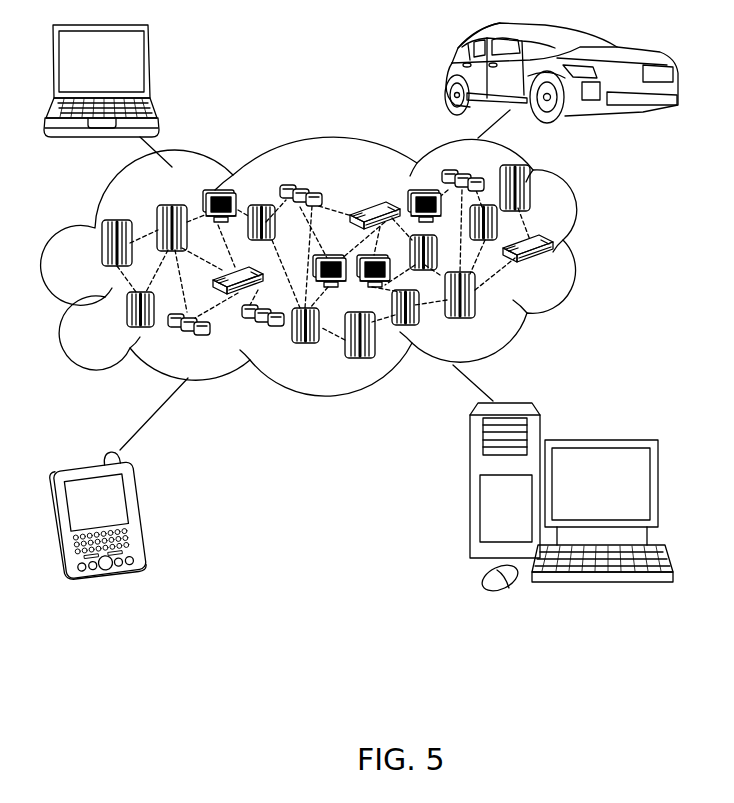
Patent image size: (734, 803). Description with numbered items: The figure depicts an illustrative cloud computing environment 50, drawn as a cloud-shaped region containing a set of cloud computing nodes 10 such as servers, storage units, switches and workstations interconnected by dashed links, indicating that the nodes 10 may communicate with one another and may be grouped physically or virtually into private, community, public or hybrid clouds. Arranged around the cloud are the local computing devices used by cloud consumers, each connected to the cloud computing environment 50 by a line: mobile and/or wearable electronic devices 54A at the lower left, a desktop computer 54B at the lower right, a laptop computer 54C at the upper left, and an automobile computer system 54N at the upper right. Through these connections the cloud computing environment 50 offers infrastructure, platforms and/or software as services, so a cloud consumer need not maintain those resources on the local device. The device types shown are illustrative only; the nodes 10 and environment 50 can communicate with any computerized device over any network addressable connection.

The cloud computing nodes 10 is at (560, 268).
The cloud computing environment 50 is at (597, 250).
The mobile and/or wearable electronic devices 54A is at (147, 508).
The desktop computer 54B is at (598, 440).
The laptop computer 54C is at (150, 66).
The automobile computer system 54N is at (446, 73).